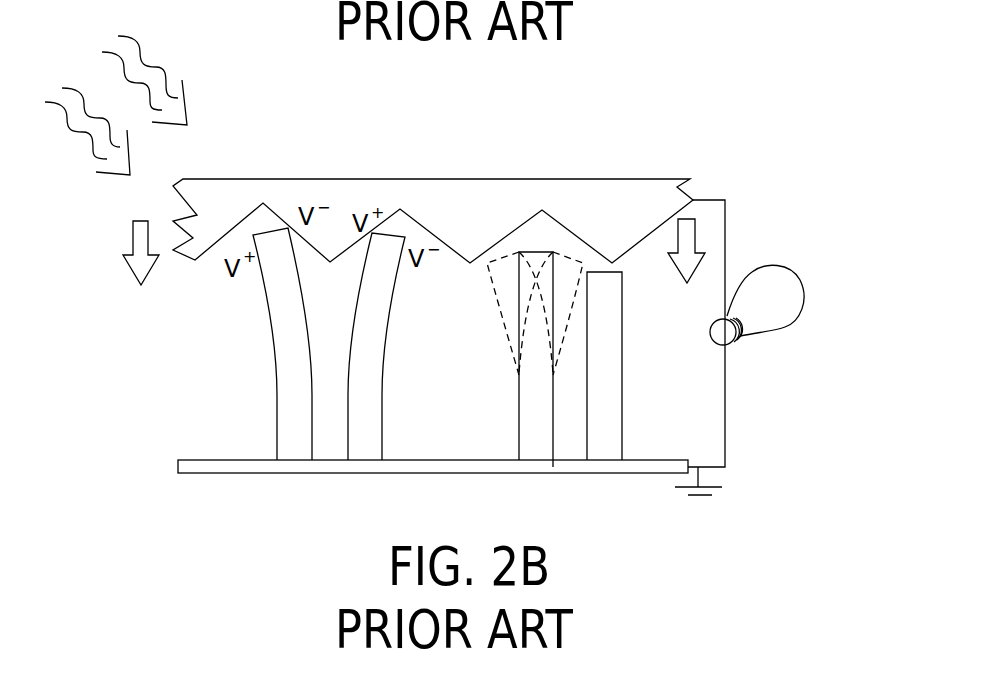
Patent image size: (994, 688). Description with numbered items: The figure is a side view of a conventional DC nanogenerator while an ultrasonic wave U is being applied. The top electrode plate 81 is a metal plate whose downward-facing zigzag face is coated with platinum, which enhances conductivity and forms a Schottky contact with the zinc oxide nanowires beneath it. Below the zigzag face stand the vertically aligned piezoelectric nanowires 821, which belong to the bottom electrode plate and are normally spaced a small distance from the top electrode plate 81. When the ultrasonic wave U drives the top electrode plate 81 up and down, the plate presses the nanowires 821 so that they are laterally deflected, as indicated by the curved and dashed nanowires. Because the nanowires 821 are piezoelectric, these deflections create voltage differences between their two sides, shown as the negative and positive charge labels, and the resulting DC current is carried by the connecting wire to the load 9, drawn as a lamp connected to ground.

The ultrasonic wave U is at (158, 68).
The top electrode plate 81 is at (452, 190).
The piezoelectric nanowires 821 is at (280, 348).
The load 9 is at (768, 278).